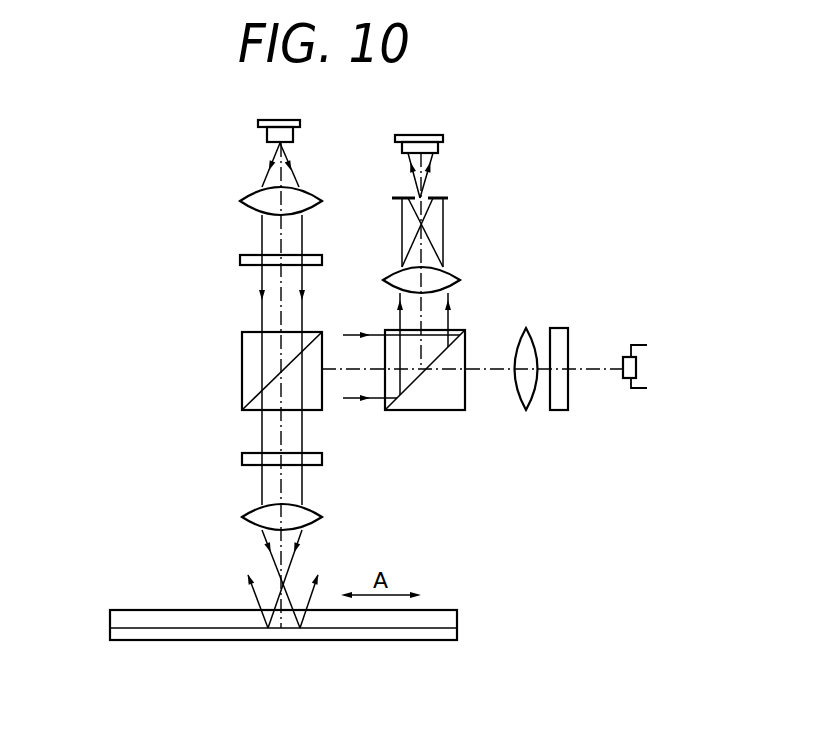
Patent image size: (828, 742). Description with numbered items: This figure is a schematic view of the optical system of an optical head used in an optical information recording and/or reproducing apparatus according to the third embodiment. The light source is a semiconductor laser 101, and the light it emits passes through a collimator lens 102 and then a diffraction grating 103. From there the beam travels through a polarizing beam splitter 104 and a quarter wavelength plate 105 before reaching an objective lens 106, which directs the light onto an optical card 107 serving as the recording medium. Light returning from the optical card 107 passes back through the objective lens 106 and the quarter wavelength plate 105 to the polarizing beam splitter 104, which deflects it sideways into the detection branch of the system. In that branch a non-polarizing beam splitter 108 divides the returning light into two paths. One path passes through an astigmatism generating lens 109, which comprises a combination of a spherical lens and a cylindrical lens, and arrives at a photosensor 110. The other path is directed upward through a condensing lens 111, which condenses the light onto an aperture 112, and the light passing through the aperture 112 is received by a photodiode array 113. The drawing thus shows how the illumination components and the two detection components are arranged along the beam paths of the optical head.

The semiconductor laser 101 is at (258, 124).
The collimator lens 102 is at (240, 201).
The diffraction grating 103 is at (240, 260).
The polarizing beam splitter 104 is at (242, 360).
The quarter wavelength plate 105 is at (242, 459).
The objective lens 106 is at (242, 517).
The optical card 107 is at (110, 622).
The non-polarizing beam splitter 108 is at (440, 410).
The astigmatism generating lens 109 is at (568, 319).
The photosensor 110 is at (636, 366).
The condensing lens 111 is at (460, 280).
The aperture 112 is at (448, 195).
The photodiode array 113 is at (443, 138).